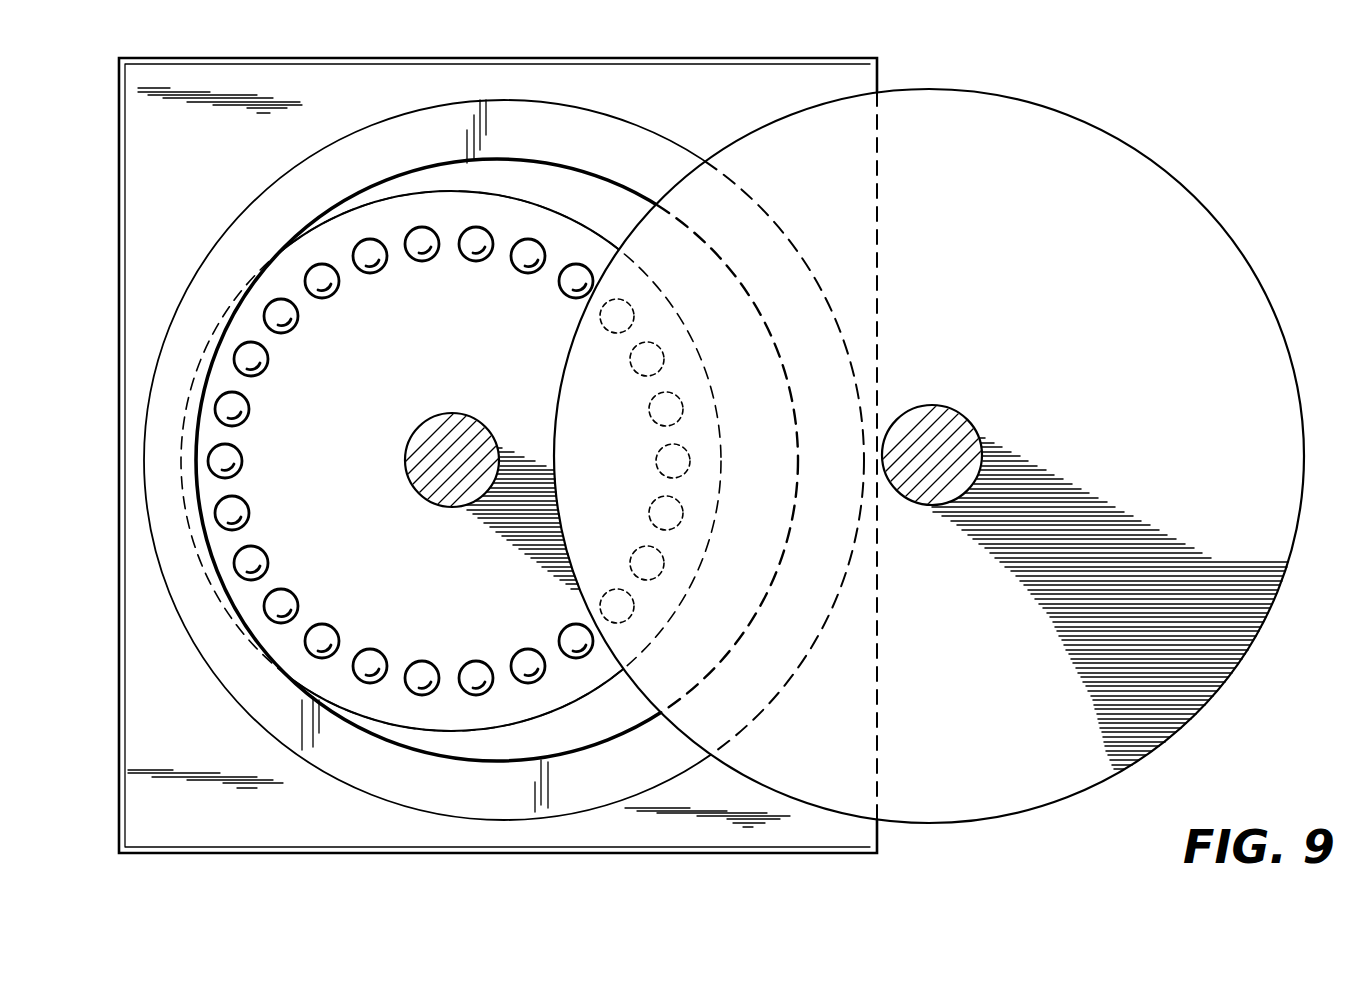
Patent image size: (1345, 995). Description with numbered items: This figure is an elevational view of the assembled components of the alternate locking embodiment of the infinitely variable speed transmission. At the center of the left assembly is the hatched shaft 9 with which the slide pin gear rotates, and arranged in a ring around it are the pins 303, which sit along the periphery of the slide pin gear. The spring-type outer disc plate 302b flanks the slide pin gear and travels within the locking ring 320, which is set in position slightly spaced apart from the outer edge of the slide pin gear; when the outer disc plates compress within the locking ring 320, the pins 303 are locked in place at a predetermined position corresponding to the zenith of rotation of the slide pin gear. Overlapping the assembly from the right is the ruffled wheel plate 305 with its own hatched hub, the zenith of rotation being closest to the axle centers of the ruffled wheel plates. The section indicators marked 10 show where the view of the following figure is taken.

The shaft 9 is at (437, 486).
The section line 10-10 / hub 10 is at (930, 428).
The outer disc plate 302b is at (498, 351).
The pins 303 is at (224, 462).
The ruffled wheel plate 305 is at (1106, 281).
The locking ring 320 is at (480, 784).